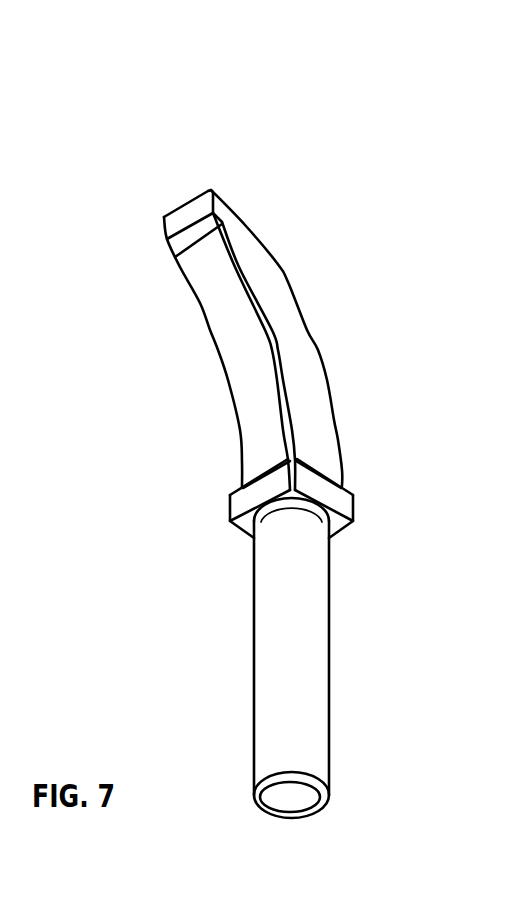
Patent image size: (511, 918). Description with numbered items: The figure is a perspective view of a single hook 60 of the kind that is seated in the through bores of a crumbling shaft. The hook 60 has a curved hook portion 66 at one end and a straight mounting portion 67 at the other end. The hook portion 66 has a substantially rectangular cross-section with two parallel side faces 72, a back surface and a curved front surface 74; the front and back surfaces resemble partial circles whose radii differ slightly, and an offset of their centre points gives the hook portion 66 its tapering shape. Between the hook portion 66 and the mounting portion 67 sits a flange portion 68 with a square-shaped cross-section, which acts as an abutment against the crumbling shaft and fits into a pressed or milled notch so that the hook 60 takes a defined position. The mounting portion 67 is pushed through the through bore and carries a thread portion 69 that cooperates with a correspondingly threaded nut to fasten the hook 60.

The hook 60 is at (285, 429).
The hook portion 66 is at (285, 328).
The front surface 74 is at (266, 396).
The side face 72 is at (325, 457).
The flange portion 68 is at (360, 500).
The mounting portion 67 is at (304, 669).
The thread portion 69 is at (276, 709).